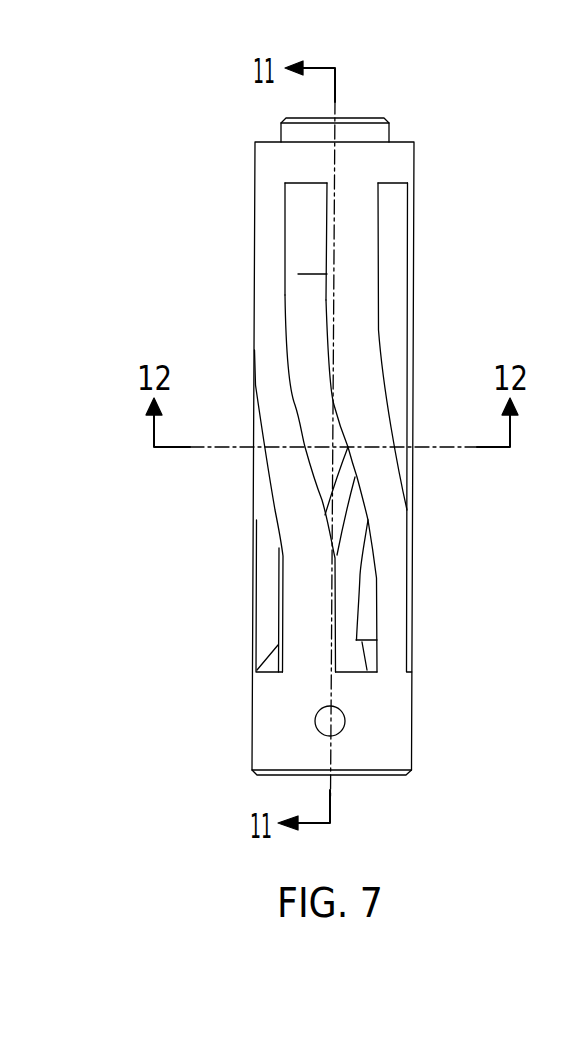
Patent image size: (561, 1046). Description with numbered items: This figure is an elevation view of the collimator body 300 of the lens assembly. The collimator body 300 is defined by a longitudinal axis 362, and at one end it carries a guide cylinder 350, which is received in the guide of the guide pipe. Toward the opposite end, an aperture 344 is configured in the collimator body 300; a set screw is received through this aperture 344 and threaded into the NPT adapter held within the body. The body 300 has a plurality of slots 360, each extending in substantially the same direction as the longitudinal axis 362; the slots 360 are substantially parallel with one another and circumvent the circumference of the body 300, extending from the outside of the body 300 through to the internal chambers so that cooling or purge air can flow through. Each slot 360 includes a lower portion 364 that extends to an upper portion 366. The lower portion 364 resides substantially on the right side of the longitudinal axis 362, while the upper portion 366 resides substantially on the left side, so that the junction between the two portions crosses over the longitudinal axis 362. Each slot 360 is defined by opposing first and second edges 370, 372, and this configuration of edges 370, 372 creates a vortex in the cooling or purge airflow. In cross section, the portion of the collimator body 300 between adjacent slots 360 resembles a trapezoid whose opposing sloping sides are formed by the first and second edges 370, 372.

The collimator body 300 is at (269, 449).
The aperture 344 is at (342, 733).
The guide cylinder 350 is at (390, 134).
The slot 360 is at (415, 171).
The longitudinal axis 362 is at (335, 108).
The lower portion 364 is at (347, 655).
The upper portion 366 is at (300, 215).
The first edge 370 is at (290, 262).
The second edge 372 is at (298, 274).